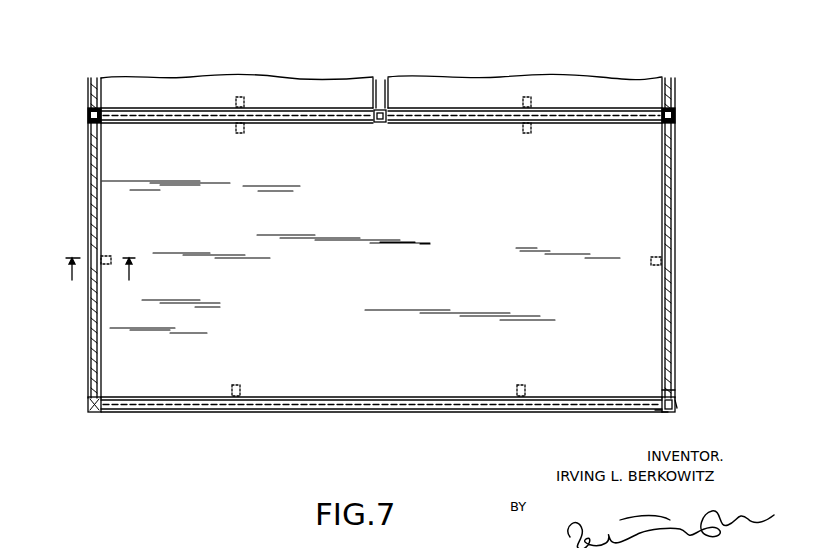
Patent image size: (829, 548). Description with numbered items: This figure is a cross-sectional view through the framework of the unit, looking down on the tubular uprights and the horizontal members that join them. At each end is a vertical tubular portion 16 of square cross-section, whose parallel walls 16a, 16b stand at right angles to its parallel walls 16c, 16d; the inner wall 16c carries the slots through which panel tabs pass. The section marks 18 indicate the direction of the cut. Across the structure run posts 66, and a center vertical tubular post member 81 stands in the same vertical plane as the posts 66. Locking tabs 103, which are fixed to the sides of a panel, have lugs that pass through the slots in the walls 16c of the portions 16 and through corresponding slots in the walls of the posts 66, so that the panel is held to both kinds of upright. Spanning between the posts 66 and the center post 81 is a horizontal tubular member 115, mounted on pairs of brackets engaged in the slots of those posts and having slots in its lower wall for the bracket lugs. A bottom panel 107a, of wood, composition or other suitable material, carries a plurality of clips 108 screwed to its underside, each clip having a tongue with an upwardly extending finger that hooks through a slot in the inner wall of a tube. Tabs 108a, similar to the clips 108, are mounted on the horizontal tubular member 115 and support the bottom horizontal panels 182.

The vertical tubular portion 16 is at (95, 413).
The wall 16a is at (662, 410).
The wall 16b is at (677, 405).
The inner wall 16c is at (673, 387).
The wall 16d is at (663, 412).
The section line indicators 18 is at (99, 278).
The post 66 is at (88, 115).
The center vertical tubular post member 81 is at (385, 124).
The locking tab 103 is at (100, 127).
The bottom panel 107a is at (361, 257).
The clip 108 is at (246, 129).
The tab 108a is at (243, 99).
The horizontal tubular member 115 is at (350, 124).
The bottom horizontal panel 182 is at (330, 90).